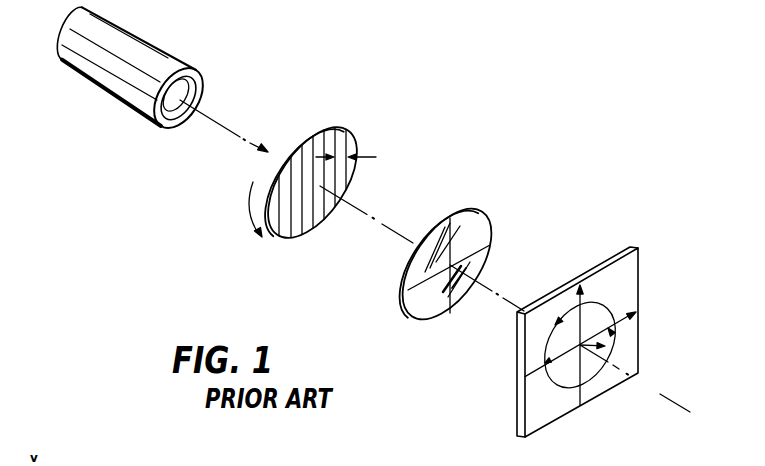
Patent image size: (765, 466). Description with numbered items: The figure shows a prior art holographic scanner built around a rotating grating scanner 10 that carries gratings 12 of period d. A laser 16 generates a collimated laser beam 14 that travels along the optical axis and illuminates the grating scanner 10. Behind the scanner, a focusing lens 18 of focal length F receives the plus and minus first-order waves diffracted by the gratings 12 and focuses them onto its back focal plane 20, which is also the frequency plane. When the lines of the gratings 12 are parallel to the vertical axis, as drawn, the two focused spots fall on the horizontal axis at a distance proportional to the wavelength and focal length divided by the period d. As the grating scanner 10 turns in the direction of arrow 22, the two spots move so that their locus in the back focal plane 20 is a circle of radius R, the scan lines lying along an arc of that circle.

The rotating grating scanner 10 is at (340, 127).
The gratings 12 is at (355, 182).
The collimated laser beam 14 is at (208, 117).
The laser 16 is at (162, 53).
The focusing lens 18 is at (484, 233).
The back focal plane 20 is at (517, 403).
The arrow 22 is at (250, 205).
The grating period d is at (353, 158).